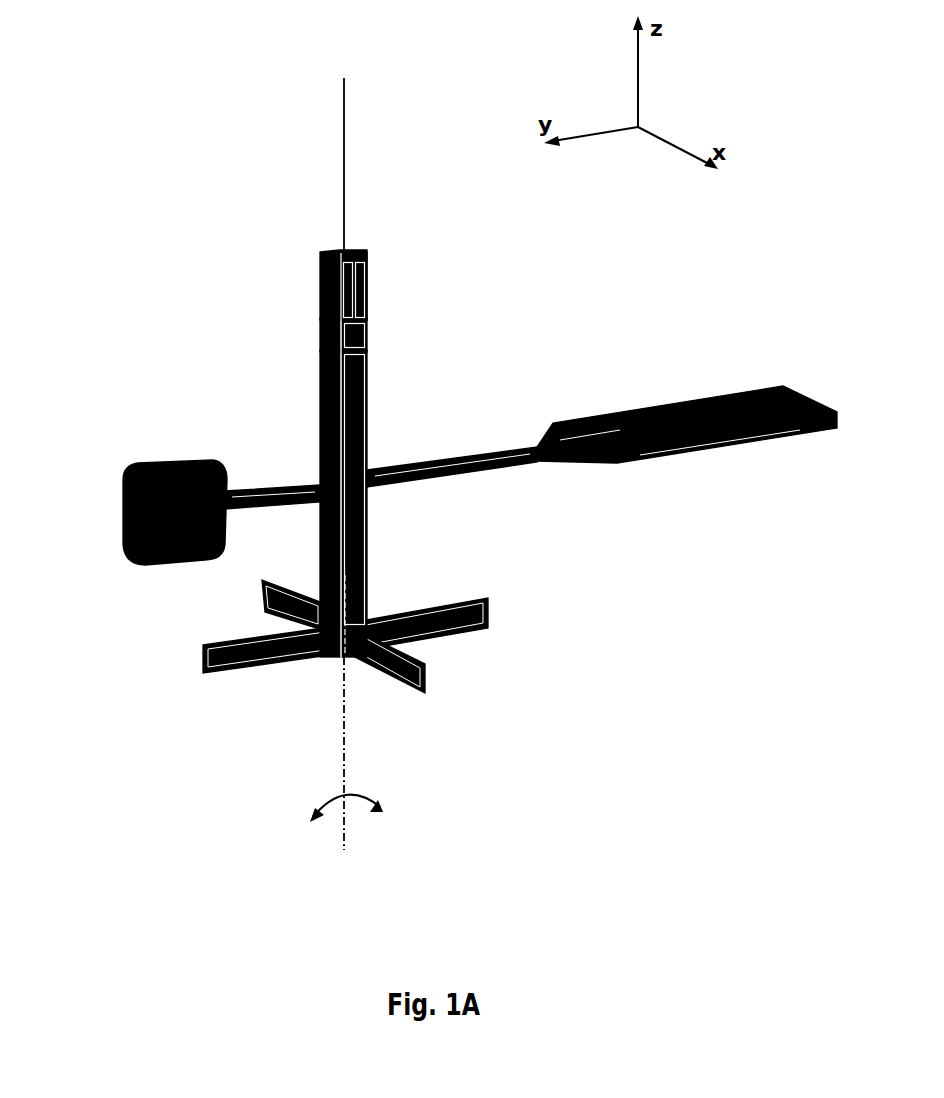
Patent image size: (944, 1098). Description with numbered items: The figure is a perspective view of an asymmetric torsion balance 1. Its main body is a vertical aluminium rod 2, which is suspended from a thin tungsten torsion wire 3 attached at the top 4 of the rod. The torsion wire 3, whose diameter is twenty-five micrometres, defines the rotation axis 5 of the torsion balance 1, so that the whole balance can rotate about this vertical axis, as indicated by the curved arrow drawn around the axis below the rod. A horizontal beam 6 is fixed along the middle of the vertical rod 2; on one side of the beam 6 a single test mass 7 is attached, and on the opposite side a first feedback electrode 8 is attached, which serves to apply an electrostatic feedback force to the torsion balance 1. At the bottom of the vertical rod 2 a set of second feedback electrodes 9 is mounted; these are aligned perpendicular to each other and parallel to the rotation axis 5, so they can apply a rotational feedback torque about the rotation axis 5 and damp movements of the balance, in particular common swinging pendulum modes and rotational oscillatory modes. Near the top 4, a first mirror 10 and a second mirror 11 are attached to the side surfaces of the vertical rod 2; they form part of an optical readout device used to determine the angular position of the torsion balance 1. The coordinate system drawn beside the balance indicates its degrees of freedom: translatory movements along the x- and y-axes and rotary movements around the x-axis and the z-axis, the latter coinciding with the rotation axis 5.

The torsion balance 1 is at (595, 646).
The vertical aluminium rod 2 is at (354, 446).
The torsion wire 3 is at (345, 167).
The top 4 is at (337, 255).
The rotation axis 5 is at (345, 837).
The horizontal beam 6 is at (447, 470).
The test mass 7 is at (166, 470).
The first feedback electrode 8 is at (685, 448).
The second feedback electrodes 9 is at (345, 674).
The first mirror 10 is at (327, 333).
The second mirror 11 is at (368, 328).